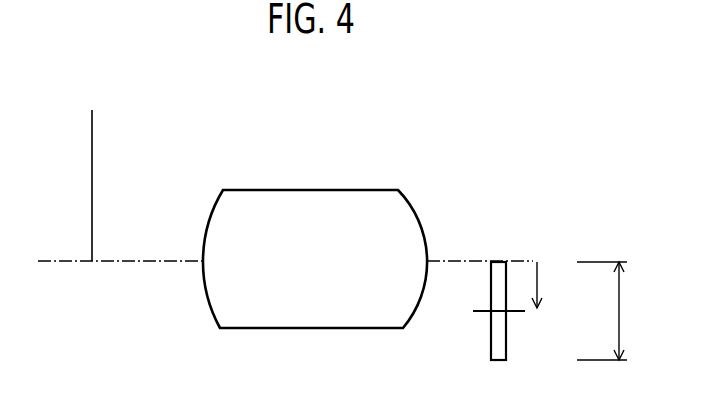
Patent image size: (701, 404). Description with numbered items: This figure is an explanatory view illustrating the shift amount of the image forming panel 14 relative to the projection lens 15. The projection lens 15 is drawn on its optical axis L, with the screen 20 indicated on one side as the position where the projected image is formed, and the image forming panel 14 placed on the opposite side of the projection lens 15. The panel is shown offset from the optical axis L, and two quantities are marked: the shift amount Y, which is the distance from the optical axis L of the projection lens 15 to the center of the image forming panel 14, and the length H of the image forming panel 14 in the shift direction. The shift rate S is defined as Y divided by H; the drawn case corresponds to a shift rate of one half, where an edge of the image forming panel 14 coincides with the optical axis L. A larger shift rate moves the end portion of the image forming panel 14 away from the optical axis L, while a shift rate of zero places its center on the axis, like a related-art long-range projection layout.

The image forming panel 14 is at (507, 340).
The projection lens 15 is at (315, 189).
The screen 20 is at (93, 118).
The optical axis L is at (42, 260).
The shift amount Y is at (544, 285).
The length in the shift direction H is at (607, 311).